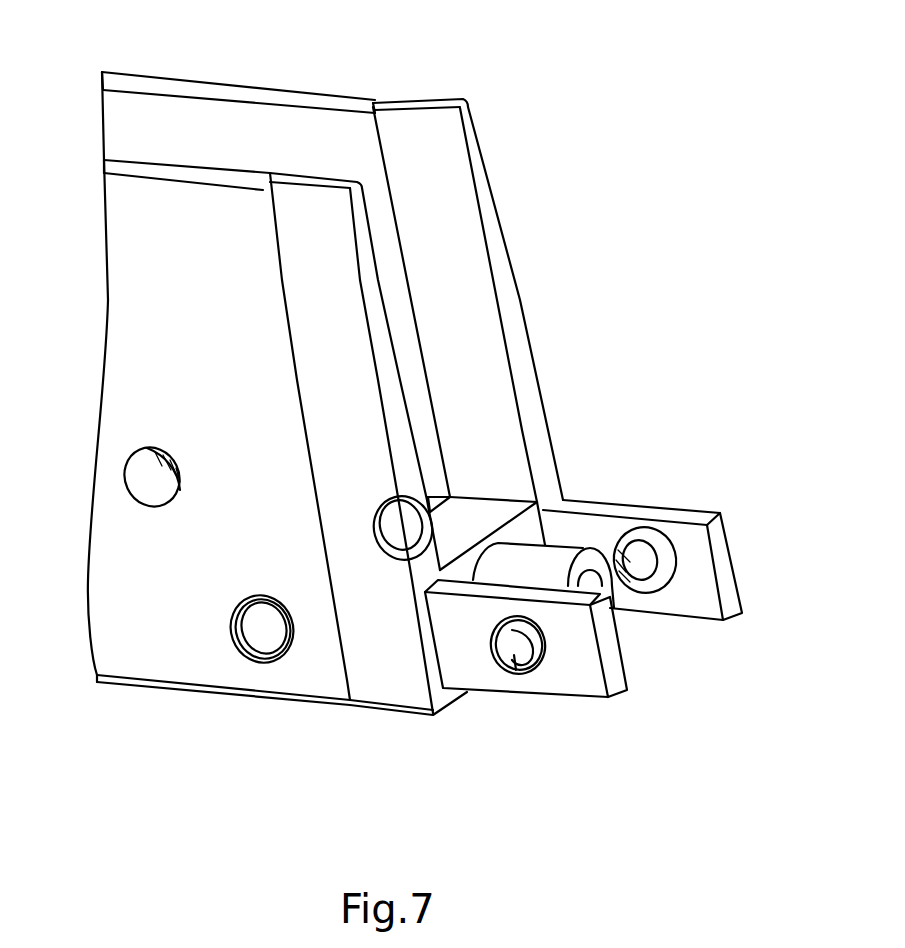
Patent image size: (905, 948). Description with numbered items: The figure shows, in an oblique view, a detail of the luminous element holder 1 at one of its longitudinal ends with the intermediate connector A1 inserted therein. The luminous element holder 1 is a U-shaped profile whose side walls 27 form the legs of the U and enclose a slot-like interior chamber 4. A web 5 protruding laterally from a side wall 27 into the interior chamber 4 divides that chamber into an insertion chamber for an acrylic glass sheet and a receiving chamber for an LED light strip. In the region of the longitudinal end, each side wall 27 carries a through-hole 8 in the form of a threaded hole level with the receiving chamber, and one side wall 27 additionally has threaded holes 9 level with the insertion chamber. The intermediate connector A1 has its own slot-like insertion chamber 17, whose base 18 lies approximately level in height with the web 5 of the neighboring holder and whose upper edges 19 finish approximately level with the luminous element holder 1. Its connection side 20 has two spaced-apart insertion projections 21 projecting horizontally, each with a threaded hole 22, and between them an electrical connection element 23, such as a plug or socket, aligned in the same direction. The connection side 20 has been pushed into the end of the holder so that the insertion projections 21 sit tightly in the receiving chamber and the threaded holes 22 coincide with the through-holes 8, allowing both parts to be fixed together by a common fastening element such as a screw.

The luminous element holder 1 is at (147, 633).
The interior chamber 4 is at (231, 135).
The web 5 is at (430, 497).
The through-hole 8 is at (293, 647).
The threaded hole 9 is at (165, 452).
The insertion chamber 17 is at (452, 252).
The base 18 is at (480, 507).
The upper edge 19 is at (428, 98).
The connection side 20 is at (770, 605).
The insertion projection 21 is at (572, 677).
The threaded hole 22 is at (513, 657).
The electrical connection element 23 is at (547, 567).
The side wall 27 is at (300, 136).
The intermediate connector A1 is at (523, 298).